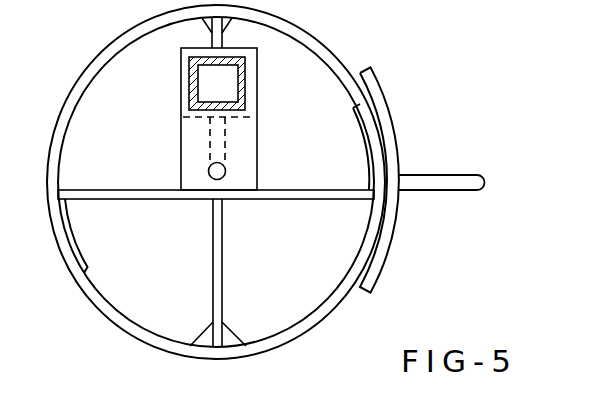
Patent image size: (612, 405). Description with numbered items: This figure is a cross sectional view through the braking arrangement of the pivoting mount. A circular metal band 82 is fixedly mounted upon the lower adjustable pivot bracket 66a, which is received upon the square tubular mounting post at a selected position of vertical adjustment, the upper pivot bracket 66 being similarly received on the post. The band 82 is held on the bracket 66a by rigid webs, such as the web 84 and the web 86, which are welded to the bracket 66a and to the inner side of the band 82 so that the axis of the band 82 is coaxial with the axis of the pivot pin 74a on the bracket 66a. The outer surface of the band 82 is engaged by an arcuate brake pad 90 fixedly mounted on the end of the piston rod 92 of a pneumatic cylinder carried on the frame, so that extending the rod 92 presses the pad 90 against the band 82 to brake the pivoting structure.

The upper adjustable pivot bracket 66 is at (220, 22).
The lower adjustable pivot bracket 66a is at (168, 150).
The pivot pin 74a is at (226, 170).
The circular metal band 82 is at (98, 315).
The rigid web 84 is at (128, 200).
The rigid web 86 is at (223, 269).
The arcuate brake pad 90 is at (384, 262).
The piston rod 92 is at (437, 175).